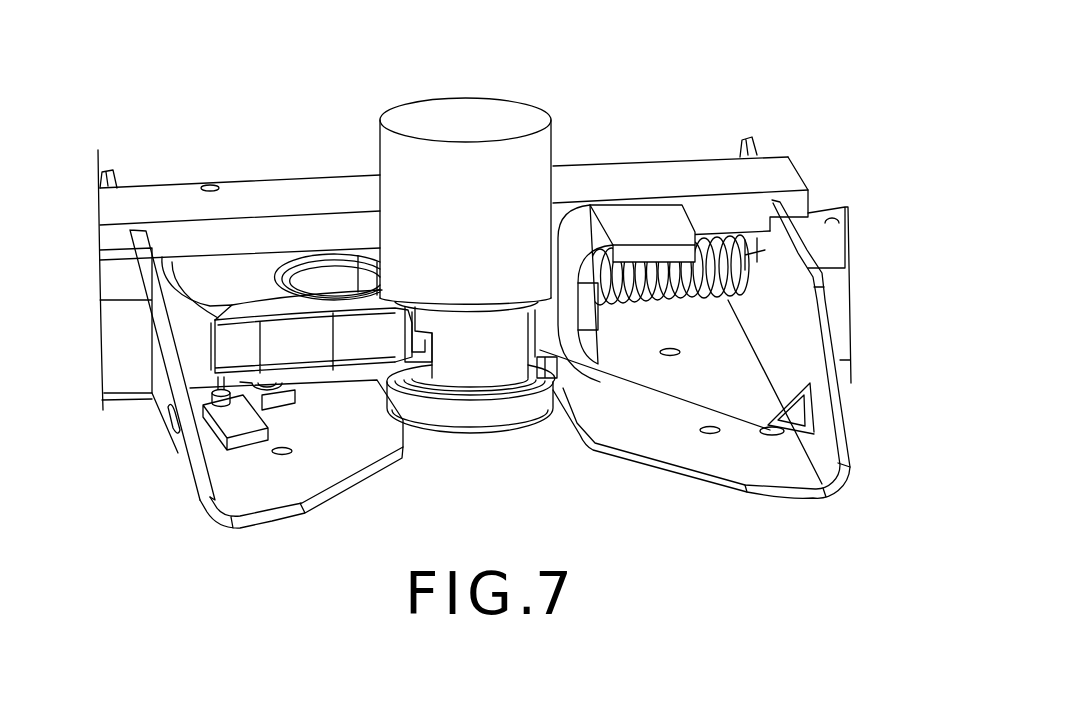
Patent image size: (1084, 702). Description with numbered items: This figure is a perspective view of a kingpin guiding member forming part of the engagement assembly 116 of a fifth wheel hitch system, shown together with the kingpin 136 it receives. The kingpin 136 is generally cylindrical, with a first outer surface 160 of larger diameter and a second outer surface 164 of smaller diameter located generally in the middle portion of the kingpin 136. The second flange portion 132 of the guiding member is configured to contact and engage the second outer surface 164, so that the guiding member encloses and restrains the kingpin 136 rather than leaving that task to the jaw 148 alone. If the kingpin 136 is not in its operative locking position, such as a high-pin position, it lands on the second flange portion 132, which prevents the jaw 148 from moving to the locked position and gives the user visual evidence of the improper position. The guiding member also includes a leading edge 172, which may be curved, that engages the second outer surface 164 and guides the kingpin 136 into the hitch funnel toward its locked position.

The engagement assembly 116 is at (678, 218).
The second flange portion 132 is at (537, 339).
The kingpin 136 is at (388, 90).
The jaw 148 is at (222, 268).
The first outer surface 160 is at (553, 141).
The second outer surface 164 is at (535, 372).
The leading edge 172 is at (770, 430).